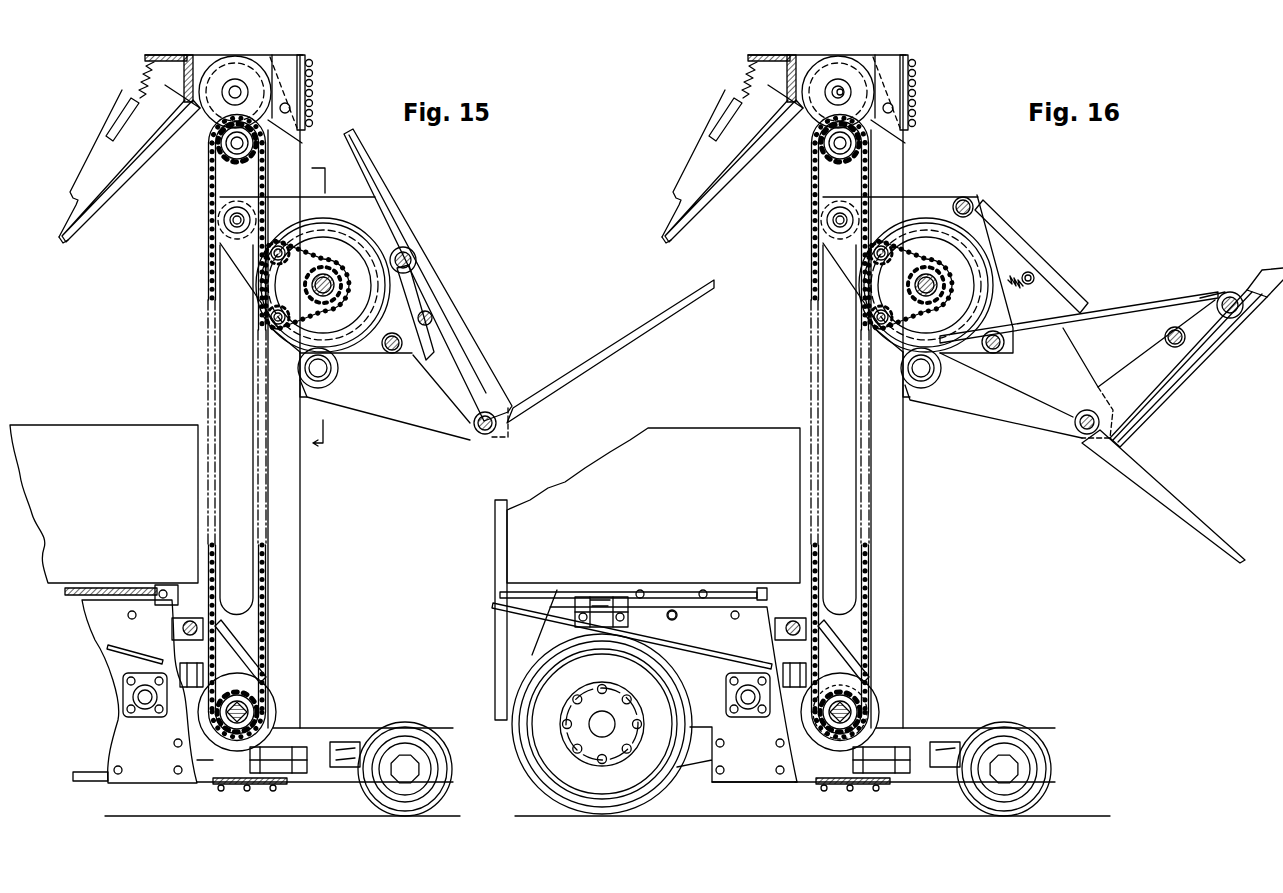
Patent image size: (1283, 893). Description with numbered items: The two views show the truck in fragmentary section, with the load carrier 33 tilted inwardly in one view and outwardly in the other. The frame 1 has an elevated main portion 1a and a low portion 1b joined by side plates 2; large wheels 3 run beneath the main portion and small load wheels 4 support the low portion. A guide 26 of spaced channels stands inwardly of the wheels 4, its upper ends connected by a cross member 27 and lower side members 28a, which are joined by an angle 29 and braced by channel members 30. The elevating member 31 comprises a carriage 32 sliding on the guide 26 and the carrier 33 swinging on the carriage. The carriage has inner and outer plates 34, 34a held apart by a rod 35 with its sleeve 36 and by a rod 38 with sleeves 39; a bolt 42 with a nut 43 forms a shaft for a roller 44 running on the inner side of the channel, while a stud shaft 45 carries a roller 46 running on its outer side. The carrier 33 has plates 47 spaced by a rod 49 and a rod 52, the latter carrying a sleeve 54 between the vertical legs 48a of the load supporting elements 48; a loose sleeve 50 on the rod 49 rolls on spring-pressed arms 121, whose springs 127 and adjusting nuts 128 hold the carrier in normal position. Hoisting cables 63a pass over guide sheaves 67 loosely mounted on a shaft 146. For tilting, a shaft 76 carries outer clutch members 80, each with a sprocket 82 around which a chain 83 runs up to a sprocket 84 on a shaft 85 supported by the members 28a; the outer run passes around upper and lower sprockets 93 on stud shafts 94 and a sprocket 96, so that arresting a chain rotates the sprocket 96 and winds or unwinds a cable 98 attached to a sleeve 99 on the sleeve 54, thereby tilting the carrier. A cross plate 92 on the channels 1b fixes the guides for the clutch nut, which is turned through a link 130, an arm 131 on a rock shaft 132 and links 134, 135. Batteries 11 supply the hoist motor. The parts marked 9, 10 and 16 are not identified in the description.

In FIG. 15, the frame 1 is at (139, 691).
In FIG. 16, the frame 1 is at (664, 686).
In FIG. 16, the main or elevated portion 1a is at (570, 586).
In FIG. 15, the low portion 1b is at (322, 782).
In FIG. 16, the low portion 1b is at (920, 782).
In FIG. 15, the side plates 2 is at (150, 782).
In FIG. 16, the side plates 2 is at (758, 782).
In FIG. 16, the large wheels 3 is at (662, 784).
In FIG. 15, the load wheels 4 is at (372, 810).
In FIG. 16, the load wheels 4 is at (980, 810).
In FIG. 15, the coupler bracket 9 is at (312, 742).
In FIG. 15, the section line 10 is at (318, 305).
In FIG. 15, the batteries 11 is at (104, 504).
In FIG. 16, the batteries 11 is at (653, 505).
In FIG. 15, the bearing flange 16 is at (146, 683).
In FIG. 16, the bearing flange 16 is at (748, 701).
In FIG. 15, the guide 26 is at (303, 503).
In FIG. 16, the guide 26 is at (877, 391).
In FIG. 15, the cross member 27 is at (308, 58).
In FIG. 16, the cross member 27 is at (909, 92).
In FIG. 15, the lower side members 28a is at (188, 125).
In FIG. 16, the lower side members 28a is at (734, 171).
In FIG. 15, the angle 29 is at (124, 90).
In FIG. 16, the angle 29 is at (722, 101).
In FIG. 15, the channel members 30 is at (88, 168).
In FIG. 16, the channel members 30 is at (689, 163).
In FIG. 15, the elevating member 31 is at (385, 410).
In FIG. 15, the carriage 32 is at (323, 309).
In FIG. 16, the carriage 32 is at (937, 305).
In FIG. 15, the load carrier 33 is at (428, 275).
In FIG. 16, the load carrier 33 is at (1188, 368).
In FIG. 15, the inner plates 34 is at (364, 354).
In FIG. 16, the inner plates 34 is at (1015, 350).
In FIG. 15, the outer plates 34a is at (400, 420).
In FIG. 16, the outer plates 34a is at (1078, 352).
In FIG. 15, the rod 35 is at (490, 438).
In FIG. 16, the rod 35 is at (1078, 442).
In FIG. 15, the sleeve 36 is at (478, 434).
In FIG. 16, the sleeve 36 is at (1076, 420).
In FIG. 15, the rod 38 is at (393, 353).
In FIG. 16, the rod 38 is at (990, 352).
In FIG. 16, the sleeves 39 is at (1000, 352).
In FIG. 15, the bolt 42 is at (229, 220).
In FIG. 16, the bolt 42 is at (811, 218).
In FIG. 15, the nut 43 is at (225, 227).
In FIG. 16, the nut 43 is at (814, 223).
In FIG. 15, the roller 44 is at (220, 239).
In FIG. 16, the roller 44 is at (816, 228).
In FIG. 15, the stud shaft 45 is at (312, 370).
In FIG. 16, the stud shaft 45 is at (916, 388).
In FIG. 15, the roller 46 is at (328, 383).
In FIG. 16, the roller 46 is at (934, 374).
In FIG. 16, the plates 47 is at (1118, 368).
In FIG. 15, the load engaging and supporting elements 48 is at (586, 376).
In FIG. 16, the load engaging and supporting elements 48 is at (1140, 460).
In FIG. 15, the vertical legs 48a is at (476, 355).
In FIG. 16, the vertical legs 48a is at (1160, 392).
In FIG. 16, the rod 49 is at (1167, 340).
In FIG. 16, the sleeve 50 is at (1208, 340).
In FIG. 15, the rod 52 is at (414, 250).
In FIG. 16, the rod 52 is at (1252, 280).
In FIG. 15, the sleeve 54 is at (416, 262).
In FIG. 16, the sleeve 54 is at (1220, 300).
In FIG. 15, the cables 63a is at (66, 238).
In FIG. 16, the cables 63a is at (686, 228).
In FIG. 15, the guide sheaves 67 is at (255, 72).
In FIG. 16, the guide sheaves 67 is at (845, 81).
In FIG. 16, the shaft 76 is at (866, 695).
In FIG. 16, the outer clutch members 80 is at (872, 704).
In FIG. 15, the sprocket 82 is at (235, 690).
In FIG. 16, the sprocket 82 is at (840, 693).
In FIG. 15, the chains 83 is at (206, 270).
In FIG. 16, the chains 83 is at (822, 428).
In FIG. 15, the sprockets 84 is at (237, 157).
In FIG. 16, the sprockets 84 is at (840, 157).
In FIG. 15, the shaft 85 is at (226, 148).
In FIG. 16, the shaft 85 is at (815, 151).
In FIG. 16, the cross plate 92 is at (853, 791).
In FIG. 15, the sprockets 93 is at (280, 242).
In FIG. 16, the sprockets 93 is at (883, 297).
In FIG. 15, the stud shafts 94 is at (268, 276).
In FIG. 16, the stud shafts 94 is at (890, 285).
In FIG. 16, the sprocket 96 is at (906, 286).
In FIG. 16, the cable 98 is at (1108, 312).
In FIG. 16, the sleeve 99 is at (1205, 296).
In FIG. 15, the spring devices 121 is at (432, 352).
In FIG. 16, the spring devices 121 is at (1030, 238).
In FIG. 16, the spring 127 is at (1026, 286).
In FIG. 16, the nut 128 is at (632, 636).
In FIG. 15, the link 130 is at (243, 650).
In FIG. 16, the link 130 is at (843, 649).
In FIG. 15, the arm 131 is at (189, 664).
In FIG. 16, the arm 131 is at (793, 639).
In FIG. 15, the rock shaft 132 is at (190, 620).
In FIG. 16, the rock shaft 132 is at (772, 629).
In FIG. 15, the link 134 is at (150, 588).
In FIG. 16, the link 134 is at (748, 592).
In FIG. 15, the link 135 is at (150, 650).
In FIG. 16, the link 135 is at (666, 616).
In FIG. 16, the shaft 146 is at (840, 90).